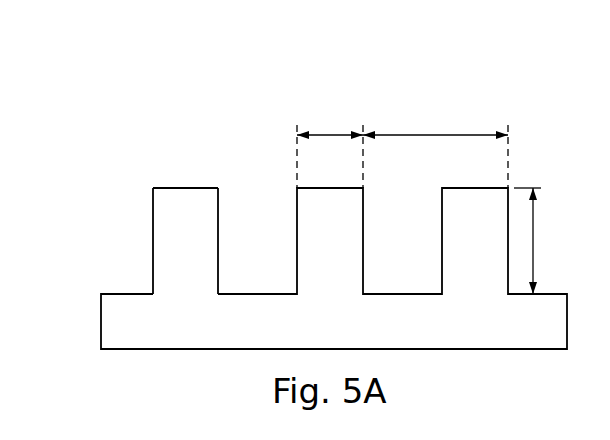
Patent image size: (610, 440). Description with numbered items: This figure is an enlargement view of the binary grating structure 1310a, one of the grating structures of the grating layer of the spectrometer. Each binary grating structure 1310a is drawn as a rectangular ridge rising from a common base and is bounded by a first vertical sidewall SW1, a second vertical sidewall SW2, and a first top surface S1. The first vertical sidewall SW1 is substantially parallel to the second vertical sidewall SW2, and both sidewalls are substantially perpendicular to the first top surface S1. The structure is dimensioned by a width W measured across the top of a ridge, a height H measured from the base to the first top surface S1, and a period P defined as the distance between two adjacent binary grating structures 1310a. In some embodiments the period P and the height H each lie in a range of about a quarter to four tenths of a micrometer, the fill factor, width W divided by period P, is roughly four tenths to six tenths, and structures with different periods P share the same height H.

The binary grating structure 1310a is at (305, 187).
The first top surface S1 is at (187, 188).
The first vertical sidewall SW1 is at (153, 250).
The second vertical sidewall SW2 is at (218, 250).
The width W is at (330, 146).
The period P is at (435, 146).
The height H is at (537, 241).